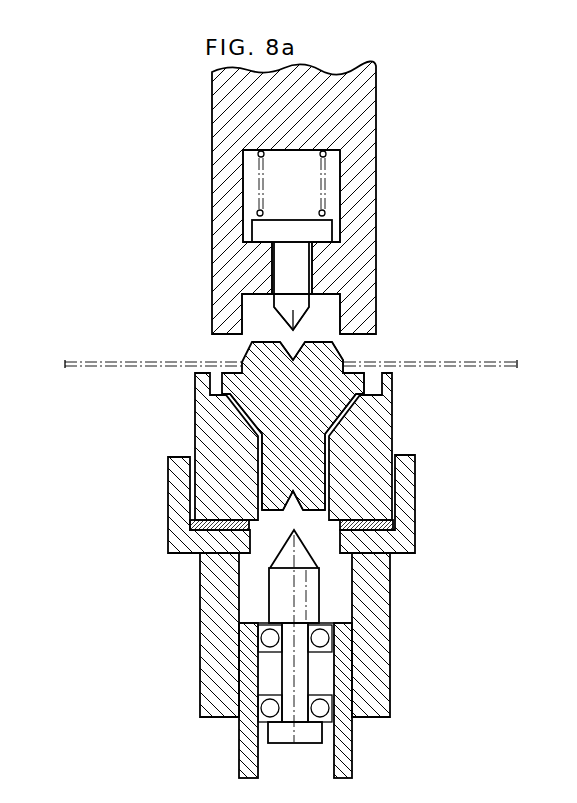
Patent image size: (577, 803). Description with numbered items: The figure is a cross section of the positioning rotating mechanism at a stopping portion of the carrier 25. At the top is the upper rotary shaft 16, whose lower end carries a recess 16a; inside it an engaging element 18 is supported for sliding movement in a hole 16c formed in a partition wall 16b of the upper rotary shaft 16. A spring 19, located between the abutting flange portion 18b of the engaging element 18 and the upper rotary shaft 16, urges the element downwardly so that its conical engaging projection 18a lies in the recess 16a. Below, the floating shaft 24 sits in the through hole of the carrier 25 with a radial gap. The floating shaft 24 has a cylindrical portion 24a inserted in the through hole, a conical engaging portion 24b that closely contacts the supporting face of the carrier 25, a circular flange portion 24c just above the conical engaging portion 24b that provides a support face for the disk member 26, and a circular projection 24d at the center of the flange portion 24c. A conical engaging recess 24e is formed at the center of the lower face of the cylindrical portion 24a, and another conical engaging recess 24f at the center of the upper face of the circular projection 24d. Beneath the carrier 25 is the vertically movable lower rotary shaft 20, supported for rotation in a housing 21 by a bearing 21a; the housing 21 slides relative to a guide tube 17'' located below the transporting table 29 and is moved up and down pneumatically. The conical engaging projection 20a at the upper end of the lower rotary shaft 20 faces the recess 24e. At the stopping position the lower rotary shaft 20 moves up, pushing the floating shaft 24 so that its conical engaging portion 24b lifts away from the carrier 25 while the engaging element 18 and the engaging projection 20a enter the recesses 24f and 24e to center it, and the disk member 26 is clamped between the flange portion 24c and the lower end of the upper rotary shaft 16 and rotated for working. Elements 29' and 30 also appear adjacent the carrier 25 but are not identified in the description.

The upper rotary shaft 16 is at (365, 183).
The recess 16a is at (363, 298).
The partition wall 16b is at (333, 266).
The hole 16c is at (330, 257).
The engaging element 18 is at (282, 258).
The conical engaging projection 18a is at (243, 310).
The abutting flange portion 18b is at (260, 228).
The spring 19 is at (343, 150).
The disk member 26 is at (83, 362).
The floating shaft 24 is at (353, 382).
The cylindrical portion 24a is at (272, 463).
The conical engaging portion 24b is at (336, 418).
The circular flange portion 24c is at (373, 382).
The circular projection 24d is at (343, 350).
The conical engaging recess 24e is at (278, 517).
The conical engaging recess 24f is at (290, 338).
The carrier 25 is at (367, 443).
The transporting table 29 is at (291, 517).
The retaining ring 29' is at (414, 504).
The spacer ring 30 is at (390, 522).
The guide tube 17'' is at (258, 635).
The lower rotary shaft 20 is at (300, 667).
The conical engaging projection 20a is at (318, 560).
The housing 21 is at (340, 755).
The bearing 21a is at (337, 635).